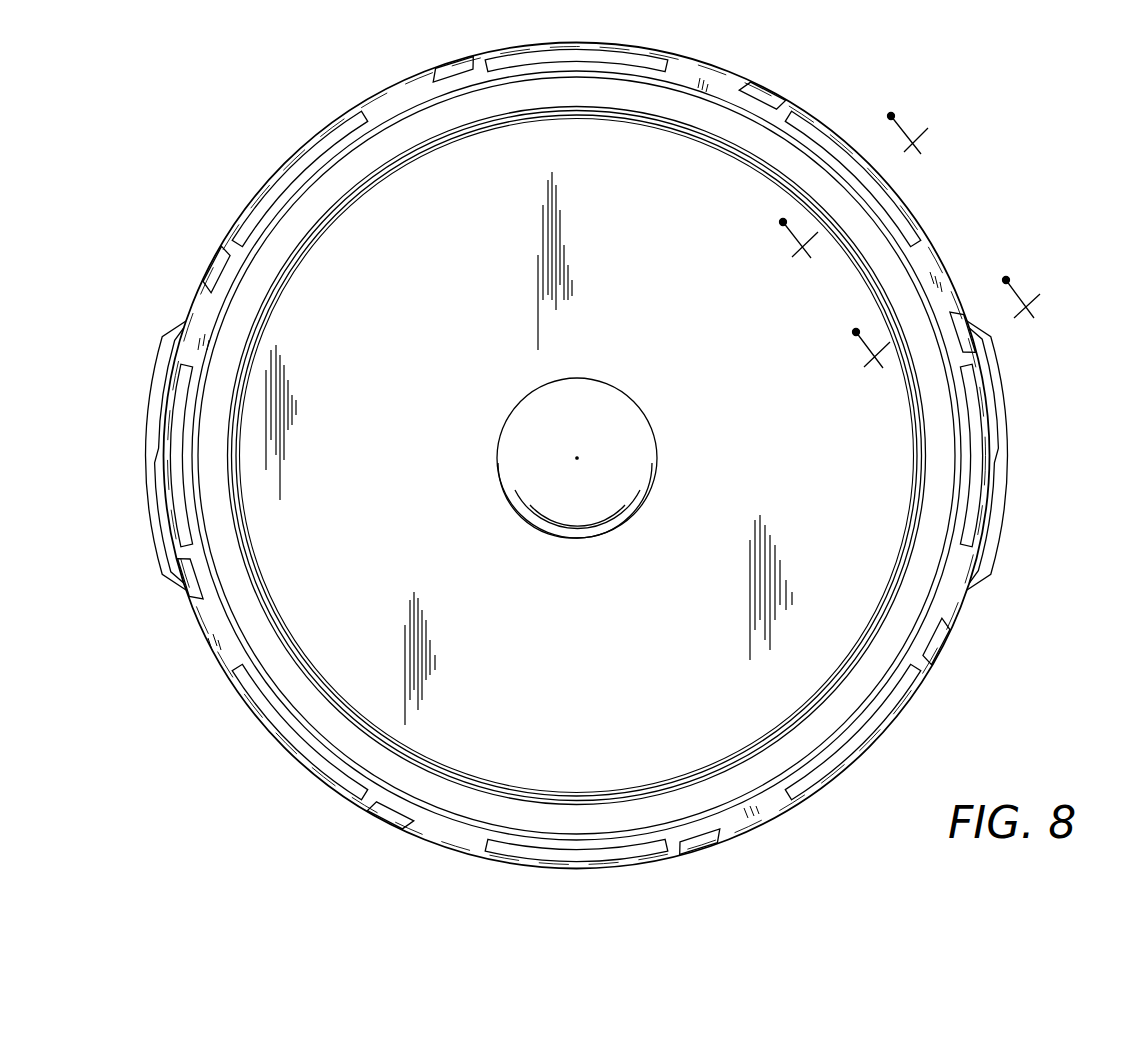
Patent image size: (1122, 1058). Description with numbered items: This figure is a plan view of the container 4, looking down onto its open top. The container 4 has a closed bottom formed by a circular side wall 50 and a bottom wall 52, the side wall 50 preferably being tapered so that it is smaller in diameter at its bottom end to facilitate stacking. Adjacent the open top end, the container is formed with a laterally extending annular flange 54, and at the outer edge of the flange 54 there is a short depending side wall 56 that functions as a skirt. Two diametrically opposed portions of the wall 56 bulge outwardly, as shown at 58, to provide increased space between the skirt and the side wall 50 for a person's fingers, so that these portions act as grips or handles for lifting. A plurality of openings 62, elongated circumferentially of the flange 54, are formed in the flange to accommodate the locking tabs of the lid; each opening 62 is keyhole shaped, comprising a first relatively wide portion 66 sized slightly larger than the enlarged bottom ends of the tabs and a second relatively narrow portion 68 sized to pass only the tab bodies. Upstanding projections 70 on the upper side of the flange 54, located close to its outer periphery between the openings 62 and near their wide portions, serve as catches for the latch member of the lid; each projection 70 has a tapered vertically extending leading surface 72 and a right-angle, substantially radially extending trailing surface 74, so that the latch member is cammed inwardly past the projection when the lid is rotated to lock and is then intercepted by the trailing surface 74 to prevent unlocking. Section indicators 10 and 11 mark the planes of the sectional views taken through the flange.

The container 4 is at (968, 637).
The section line 10 is at (867, 198).
The section line 11 is at (943, 339).
The circular side wall 50 is at (215, 345).
The bottom wall 52 is at (600, 591).
The annular flange 54 is at (407, 97).
The depending side wall 56 is at (327, 153).
The outwardly bulging portions 58 is at (180, 332).
The openings 62 is at (565, 840).
The first relatively wide portion 66 is at (283, 222).
The second relatively narrow portion 68 is at (340, 147).
The upstanding projections 70 is at (225, 287).
The leading surface 72 is at (203, 603).
The trailing surface 74 is at (680, 840).